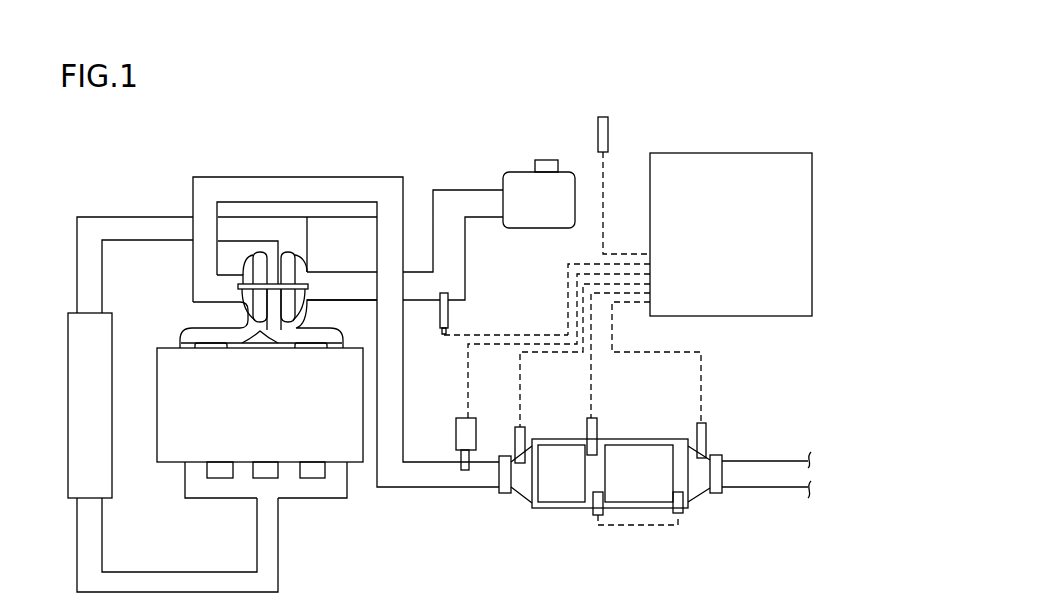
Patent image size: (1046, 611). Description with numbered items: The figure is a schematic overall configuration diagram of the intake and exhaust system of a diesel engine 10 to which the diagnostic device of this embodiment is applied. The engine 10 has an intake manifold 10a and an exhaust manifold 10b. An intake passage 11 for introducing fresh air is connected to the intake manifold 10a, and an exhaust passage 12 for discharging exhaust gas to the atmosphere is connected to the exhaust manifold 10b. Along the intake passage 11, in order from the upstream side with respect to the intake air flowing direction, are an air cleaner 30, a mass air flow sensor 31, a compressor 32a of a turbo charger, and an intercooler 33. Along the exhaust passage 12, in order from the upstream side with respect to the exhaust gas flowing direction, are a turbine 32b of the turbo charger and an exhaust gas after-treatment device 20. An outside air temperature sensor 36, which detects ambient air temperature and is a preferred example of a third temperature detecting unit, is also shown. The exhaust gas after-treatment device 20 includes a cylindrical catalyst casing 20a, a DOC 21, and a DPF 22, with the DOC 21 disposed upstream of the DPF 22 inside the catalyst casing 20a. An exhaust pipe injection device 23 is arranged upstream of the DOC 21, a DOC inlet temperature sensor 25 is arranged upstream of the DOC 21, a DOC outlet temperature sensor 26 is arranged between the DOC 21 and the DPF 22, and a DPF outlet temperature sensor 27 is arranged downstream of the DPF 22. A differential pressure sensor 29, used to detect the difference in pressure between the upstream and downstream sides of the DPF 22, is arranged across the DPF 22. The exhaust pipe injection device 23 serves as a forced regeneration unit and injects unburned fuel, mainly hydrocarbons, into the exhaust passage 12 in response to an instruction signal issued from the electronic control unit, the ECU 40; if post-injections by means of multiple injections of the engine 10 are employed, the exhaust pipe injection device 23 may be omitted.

The engine 10 is at (251, 416).
The intake manifold 10a is at (185, 484).
The exhaust manifold 10b is at (183, 340).
The intake passage 11 is at (137, 216).
The exhaust passage 12 is at (296, 176).
The exhaust gas after-treatment device 20 is at (655, 523).
The catalyst casing 20a is at (563, 512).
The DOC 21 is at (550, 482).
The DPF 22 is at (627, 482).
The exhaust pipe injection device 23 is at (461, 417).
The DOC inlet temperature sensor 25 is at (514, 435).
The DOC outlet temperature sensor 26 is at (586, 430).
The DPF outlet temperature sensor 27 is at (697, 440).
The differential pressure sensor 29 is at (680, 528).
The air cleaner 30 is at (538, 229).
The mass air flow sensor 31 is at (449, 311).
The compressor 32a is at (307, 270).
The turbine 32b is at (243, 268).
The intercooler 33 is at (79, 413).
The outside air temperature sensor 36 is at (597, 134).
The ECU 40 is at (724, 152).